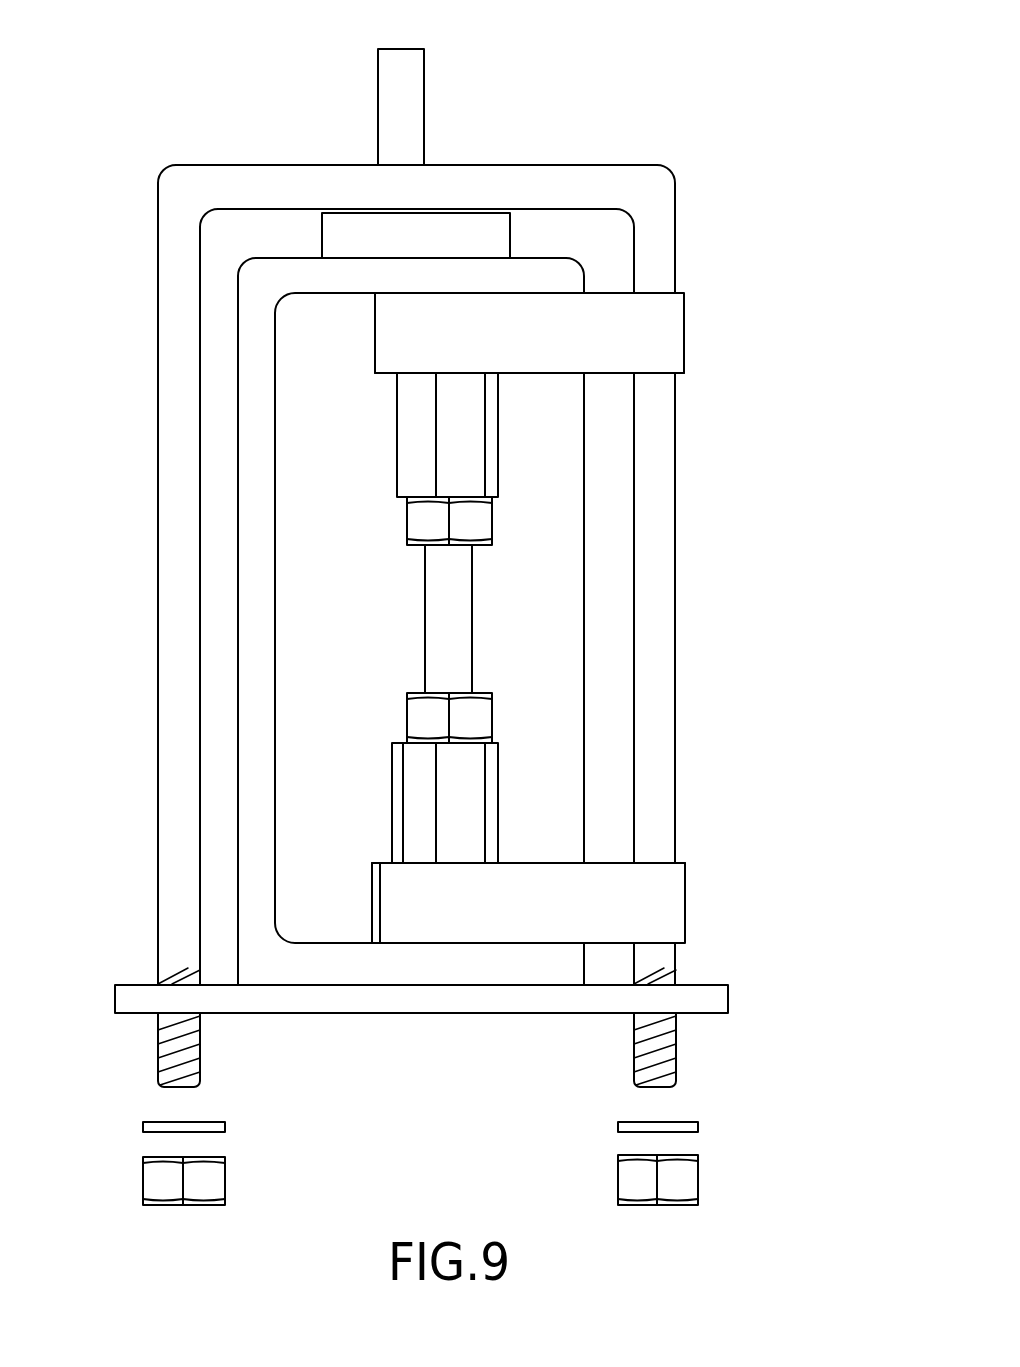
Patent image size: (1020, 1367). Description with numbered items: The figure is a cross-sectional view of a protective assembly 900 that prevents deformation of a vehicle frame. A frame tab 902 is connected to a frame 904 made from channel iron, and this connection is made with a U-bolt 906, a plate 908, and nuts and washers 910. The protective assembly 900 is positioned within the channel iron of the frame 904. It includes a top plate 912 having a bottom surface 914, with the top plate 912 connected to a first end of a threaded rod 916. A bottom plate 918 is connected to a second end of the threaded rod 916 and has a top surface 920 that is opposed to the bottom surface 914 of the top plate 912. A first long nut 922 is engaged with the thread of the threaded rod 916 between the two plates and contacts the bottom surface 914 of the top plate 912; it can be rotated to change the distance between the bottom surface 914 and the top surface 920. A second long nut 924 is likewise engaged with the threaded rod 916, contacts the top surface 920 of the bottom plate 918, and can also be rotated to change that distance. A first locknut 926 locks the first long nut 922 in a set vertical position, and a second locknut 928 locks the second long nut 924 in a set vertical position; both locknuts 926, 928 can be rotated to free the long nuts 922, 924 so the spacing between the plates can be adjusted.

The protective assembly 900 is at (737, 343).
The frame tab 902 is at (442, 68).
The frame 904 is at (258, 420).
The U-bolt 906 is at (657, 163).
The plate 908 is at (728, 1002).
The nuts and washers 910 is at (243, 1122).
The top plate 912 is at (682, 293).
The bottom surface 914 is at (593, 375).
The threaded rod 916 is at (472, 605).
The bottom plate 918 is at (685, 900).
The top surface 920 is at (620, 863).
The first long nut 922 is at (498, 427).
The second long nut 924 is at (498, 803).
The first locknut 926 is at (492, 519).
The second locknut 928 is at (492, 717).